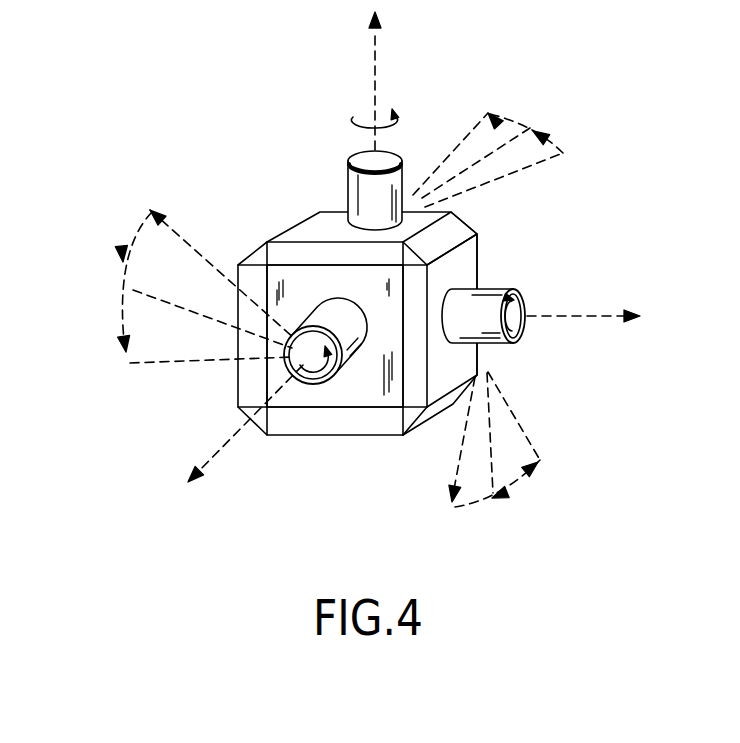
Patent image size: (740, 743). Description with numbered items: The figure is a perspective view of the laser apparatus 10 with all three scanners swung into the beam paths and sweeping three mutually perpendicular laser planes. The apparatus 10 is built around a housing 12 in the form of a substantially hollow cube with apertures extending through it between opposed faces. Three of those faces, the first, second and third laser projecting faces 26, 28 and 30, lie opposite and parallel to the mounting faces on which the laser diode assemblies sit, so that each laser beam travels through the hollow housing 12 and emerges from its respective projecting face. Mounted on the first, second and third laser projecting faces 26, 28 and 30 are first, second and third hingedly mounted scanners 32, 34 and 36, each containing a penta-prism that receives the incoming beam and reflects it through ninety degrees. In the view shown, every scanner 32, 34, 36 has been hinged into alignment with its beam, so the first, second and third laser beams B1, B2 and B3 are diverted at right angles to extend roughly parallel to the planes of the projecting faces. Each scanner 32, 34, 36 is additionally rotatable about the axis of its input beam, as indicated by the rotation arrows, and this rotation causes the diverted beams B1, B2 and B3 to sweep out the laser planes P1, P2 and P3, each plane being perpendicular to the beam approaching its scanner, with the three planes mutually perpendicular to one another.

The laser apparatus 10 is at (205, 118).
The housing 12 is at (256, 435).
The first laser projecting face 26 is at (468, 258).
The second laser projecting face 28 is at (365, 392).
The third laser projecting face 30 is at (292, 238).
The first scanner 32 is at (516, 293).
The second scanner 34 is at (340, 380).
The third scanner 36 is at (347, 187).
The first laser plane P1 is at (500, 505).
The second laser plane P2 is at (117, 322).
The third laser plane P3 is at (523, 122).
The first laser beam B1 is at (458, 457).
The second laser beam B2 is at (165, 215).
The third laser beam B3 is at (546, 155).